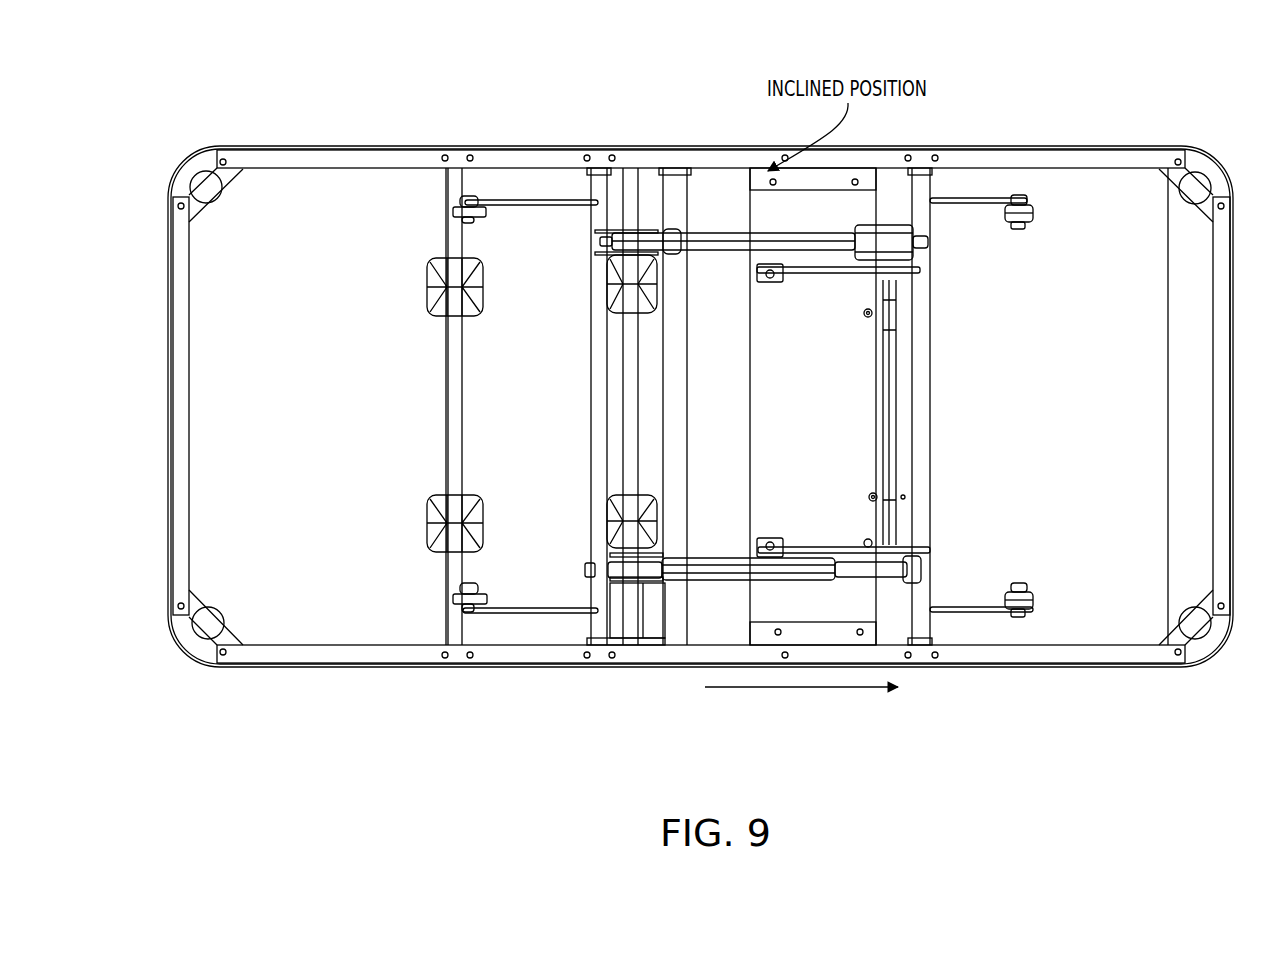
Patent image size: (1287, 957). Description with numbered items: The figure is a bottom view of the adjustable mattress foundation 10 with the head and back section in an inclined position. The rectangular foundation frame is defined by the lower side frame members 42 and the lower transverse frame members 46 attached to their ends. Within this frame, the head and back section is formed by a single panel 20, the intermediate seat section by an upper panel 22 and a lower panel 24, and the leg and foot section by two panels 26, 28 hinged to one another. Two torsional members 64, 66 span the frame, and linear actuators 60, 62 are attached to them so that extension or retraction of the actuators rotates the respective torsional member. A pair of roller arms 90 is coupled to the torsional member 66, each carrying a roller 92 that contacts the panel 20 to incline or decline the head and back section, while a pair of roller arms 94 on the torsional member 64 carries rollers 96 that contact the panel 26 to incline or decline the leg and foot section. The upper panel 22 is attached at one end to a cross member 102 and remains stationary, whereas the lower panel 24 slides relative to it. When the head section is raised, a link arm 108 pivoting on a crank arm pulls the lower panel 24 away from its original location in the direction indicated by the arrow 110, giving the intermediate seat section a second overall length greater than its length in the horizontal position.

The adjustable mattress foundation 10 is at (128, 138).
The panel 20 is at (1068, 403).
The upper panel 22 is at (712, 612).
The lower panel 24 is at (822, 383).
The panel 26 is at (518, 412).
The panel 28 is at (272, 412).
The lower side frame member 42 is at (384, 162).
The lower transverse frame member 46 is at (178, 401).
The linear actuator 60 is at (708, 552).
The linear actuator 62 is at (710, 228).
The torsional member 64 is at (597, 380).
The torsional member 66 is at (918, 412).
The roller arm 90 is at (958, 208).
The roller 92 is at (1035, 212).
The roller arm 94 is at (535, 208).
The roller 96 is at (480, 220).
The cross member 102 is at (677, 412).
The link arm 108 is at (805, 280).
The arrow 110 is at (793, 690).